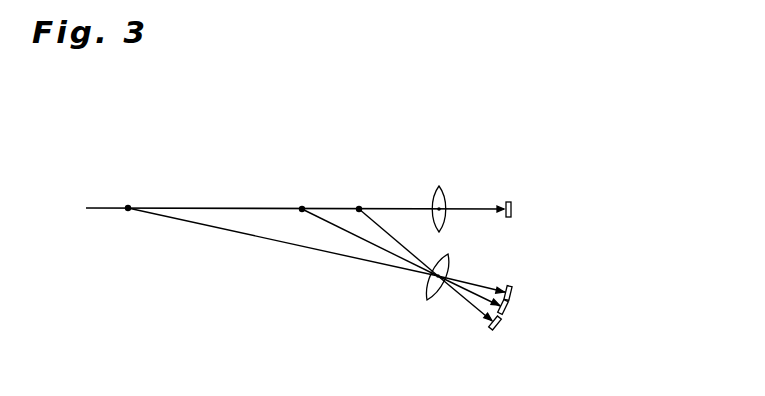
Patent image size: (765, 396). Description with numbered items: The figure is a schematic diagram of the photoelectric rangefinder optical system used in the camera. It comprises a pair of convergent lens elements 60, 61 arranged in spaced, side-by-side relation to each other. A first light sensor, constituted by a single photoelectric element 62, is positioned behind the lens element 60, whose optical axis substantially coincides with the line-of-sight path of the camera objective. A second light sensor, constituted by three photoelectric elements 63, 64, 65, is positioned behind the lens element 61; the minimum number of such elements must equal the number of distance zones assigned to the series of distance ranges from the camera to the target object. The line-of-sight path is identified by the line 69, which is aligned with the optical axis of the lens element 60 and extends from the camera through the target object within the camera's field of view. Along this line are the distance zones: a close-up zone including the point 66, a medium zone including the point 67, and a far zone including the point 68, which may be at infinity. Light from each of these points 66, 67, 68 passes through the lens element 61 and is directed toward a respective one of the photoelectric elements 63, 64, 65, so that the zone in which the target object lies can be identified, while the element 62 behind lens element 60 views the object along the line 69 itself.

The convergent lens element 60 is at (446, 194).
The convergent lens element 61 is at (449, 258).
The photoelectric element 62 is at (512, 205).
The photoelectric element 63 is at (512, 292).
The photoelectric element 64 is at (507, 308).
The photoelectric element 65 is at (498, 326).
The point 66 is at (359, 209).
The point 67 is at (302, 209).
The point 68 is at (128, 208).
The line 69 is at (402, 209).